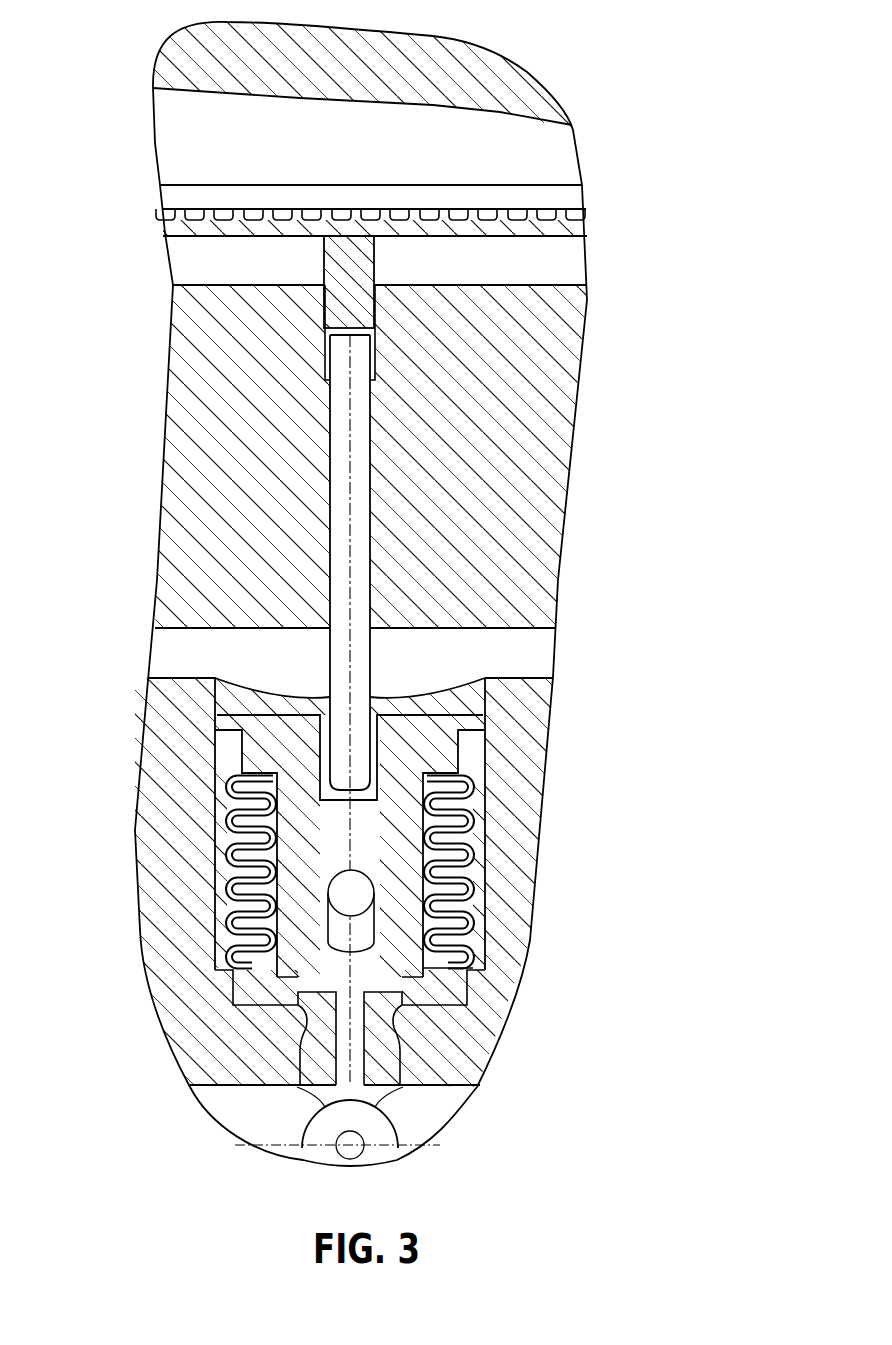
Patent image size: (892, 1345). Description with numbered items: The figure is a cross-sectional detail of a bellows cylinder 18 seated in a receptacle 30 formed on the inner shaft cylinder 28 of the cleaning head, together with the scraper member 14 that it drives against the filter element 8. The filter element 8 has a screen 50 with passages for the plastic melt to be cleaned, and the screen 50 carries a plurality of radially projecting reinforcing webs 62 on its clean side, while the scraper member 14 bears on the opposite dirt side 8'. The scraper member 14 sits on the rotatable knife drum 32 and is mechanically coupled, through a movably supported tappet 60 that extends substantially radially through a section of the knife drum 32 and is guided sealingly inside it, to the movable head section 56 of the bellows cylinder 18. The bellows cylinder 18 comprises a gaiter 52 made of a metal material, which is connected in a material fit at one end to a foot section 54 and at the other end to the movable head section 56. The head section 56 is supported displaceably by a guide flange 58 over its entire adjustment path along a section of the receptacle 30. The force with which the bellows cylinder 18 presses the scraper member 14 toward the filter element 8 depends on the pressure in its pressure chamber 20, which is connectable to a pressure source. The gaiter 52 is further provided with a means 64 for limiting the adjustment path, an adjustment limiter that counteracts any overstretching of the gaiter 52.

The reinforcing webs 62 is at (212, 210).
The screen 50 is at (562, 228).
The filter element 8 is at (434, 265).
The dirt side 8' is at (416, 291).
The scraper member 14 is at (342, 297).
The knife drum 32 is at (552, 385).
The tappet 60 is at (357, 530).
The receptacle 30 is at (462, 702).
The guide flange 58 is at (232, 722).
The movable head section 56 is at (443, 745).
The inner shaft cylinder 28 is at (152, 872).
The gaiter 52 is at (452, 843).
The foot section 54 is at (437, 998).
The pressure chamber 20 is at (472, 957).
The bellows cylinder 18 is at (444, 920).
The means for limiting adjustment path 64 is at (320, 917).